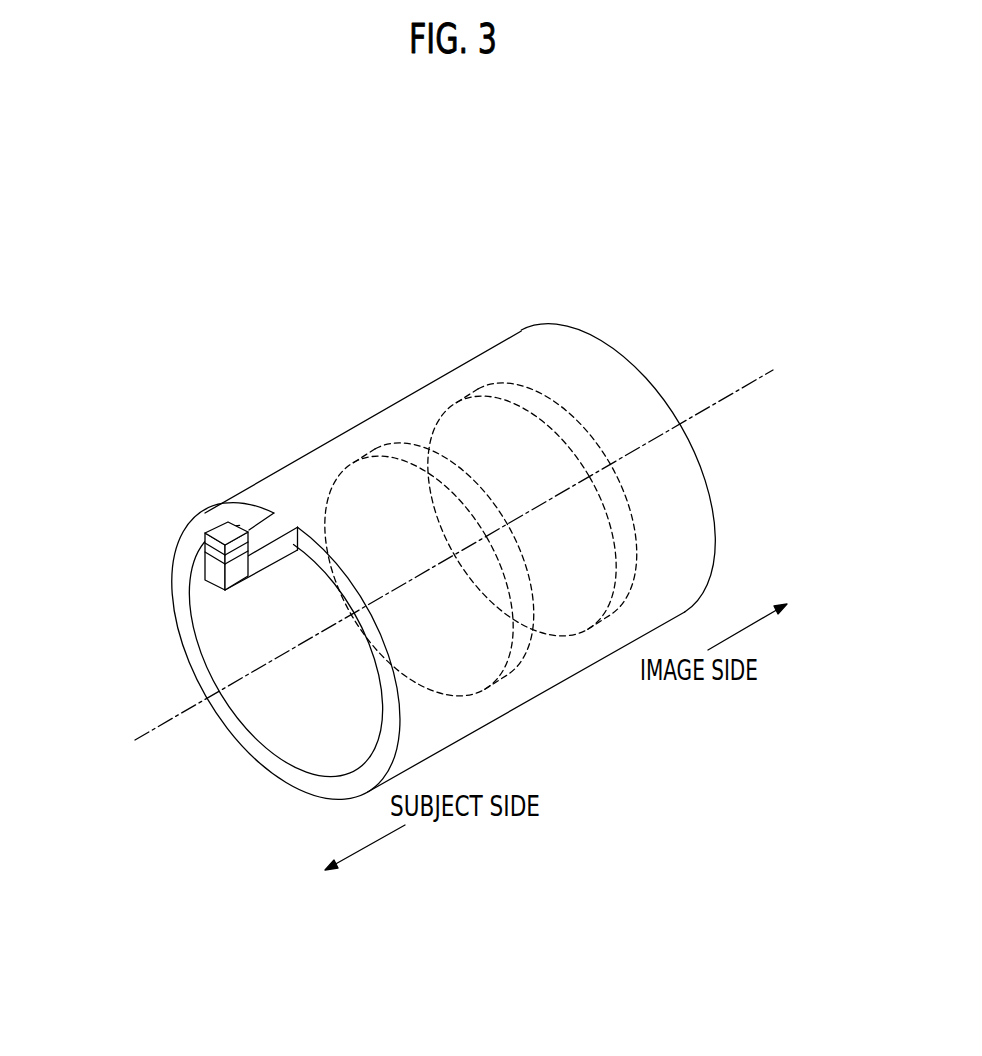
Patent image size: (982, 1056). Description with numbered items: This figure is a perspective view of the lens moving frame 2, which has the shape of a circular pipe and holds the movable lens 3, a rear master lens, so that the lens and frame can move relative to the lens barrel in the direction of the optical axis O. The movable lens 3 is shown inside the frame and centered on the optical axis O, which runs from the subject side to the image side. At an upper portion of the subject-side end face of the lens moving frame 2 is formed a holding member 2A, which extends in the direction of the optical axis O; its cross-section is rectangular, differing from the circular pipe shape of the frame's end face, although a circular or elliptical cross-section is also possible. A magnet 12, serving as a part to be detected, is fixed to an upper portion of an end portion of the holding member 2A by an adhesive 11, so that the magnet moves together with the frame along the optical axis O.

The lens moving frame 2 is at (593, 347).
The holding member 2A is at (225, 590).
The movable lens 3 is at (395, 443).
The adhesive 11 is at (210, 558).
The magnet 12 is at (207, 540).
The optical axis O is at (748, 383).